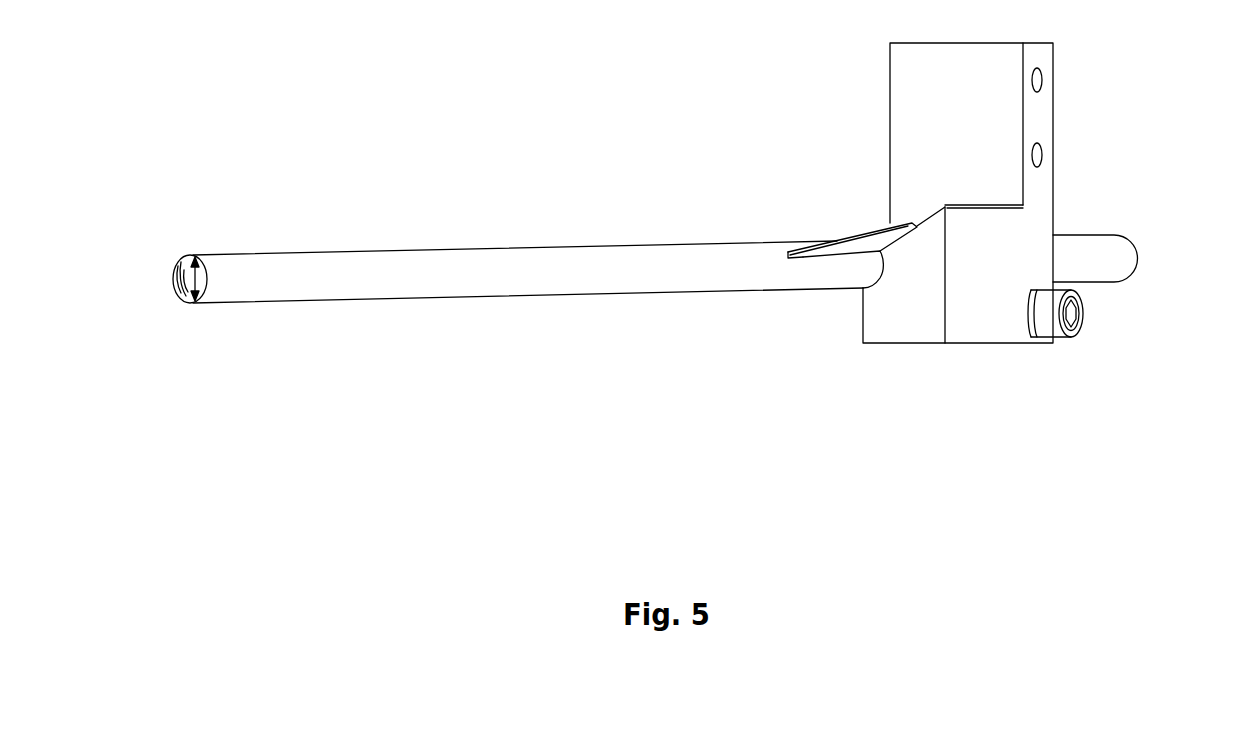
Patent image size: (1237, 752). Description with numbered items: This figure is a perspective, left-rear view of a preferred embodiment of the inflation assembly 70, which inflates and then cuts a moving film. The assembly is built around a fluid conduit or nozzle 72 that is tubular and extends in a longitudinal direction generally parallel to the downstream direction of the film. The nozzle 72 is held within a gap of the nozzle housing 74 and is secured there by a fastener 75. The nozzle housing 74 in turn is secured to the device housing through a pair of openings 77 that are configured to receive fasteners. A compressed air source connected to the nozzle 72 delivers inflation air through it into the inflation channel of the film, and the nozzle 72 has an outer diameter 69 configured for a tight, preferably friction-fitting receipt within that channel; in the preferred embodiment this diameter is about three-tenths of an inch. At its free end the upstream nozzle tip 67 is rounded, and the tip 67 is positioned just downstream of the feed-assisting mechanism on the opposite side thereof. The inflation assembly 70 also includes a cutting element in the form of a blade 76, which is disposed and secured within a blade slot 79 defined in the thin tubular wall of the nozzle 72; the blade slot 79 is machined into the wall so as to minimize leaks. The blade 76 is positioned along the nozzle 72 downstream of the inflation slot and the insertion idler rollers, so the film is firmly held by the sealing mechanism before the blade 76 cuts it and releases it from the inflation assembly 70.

The upstream nozzle tip 67 is at (180, 307).
The outer diameter 69 is at (190, 272).
The inflation assembly 70 is at (1042, 224).
The nozzle 72 is at (498, 273).
The nozzle housing 74 is at (967, 327).
The fastener 75 is at (1073, 338).
The blade 76 is at (853, 253).
The openings 77 is at (1042, 77).
The blade slot 79 is at (796, 253).